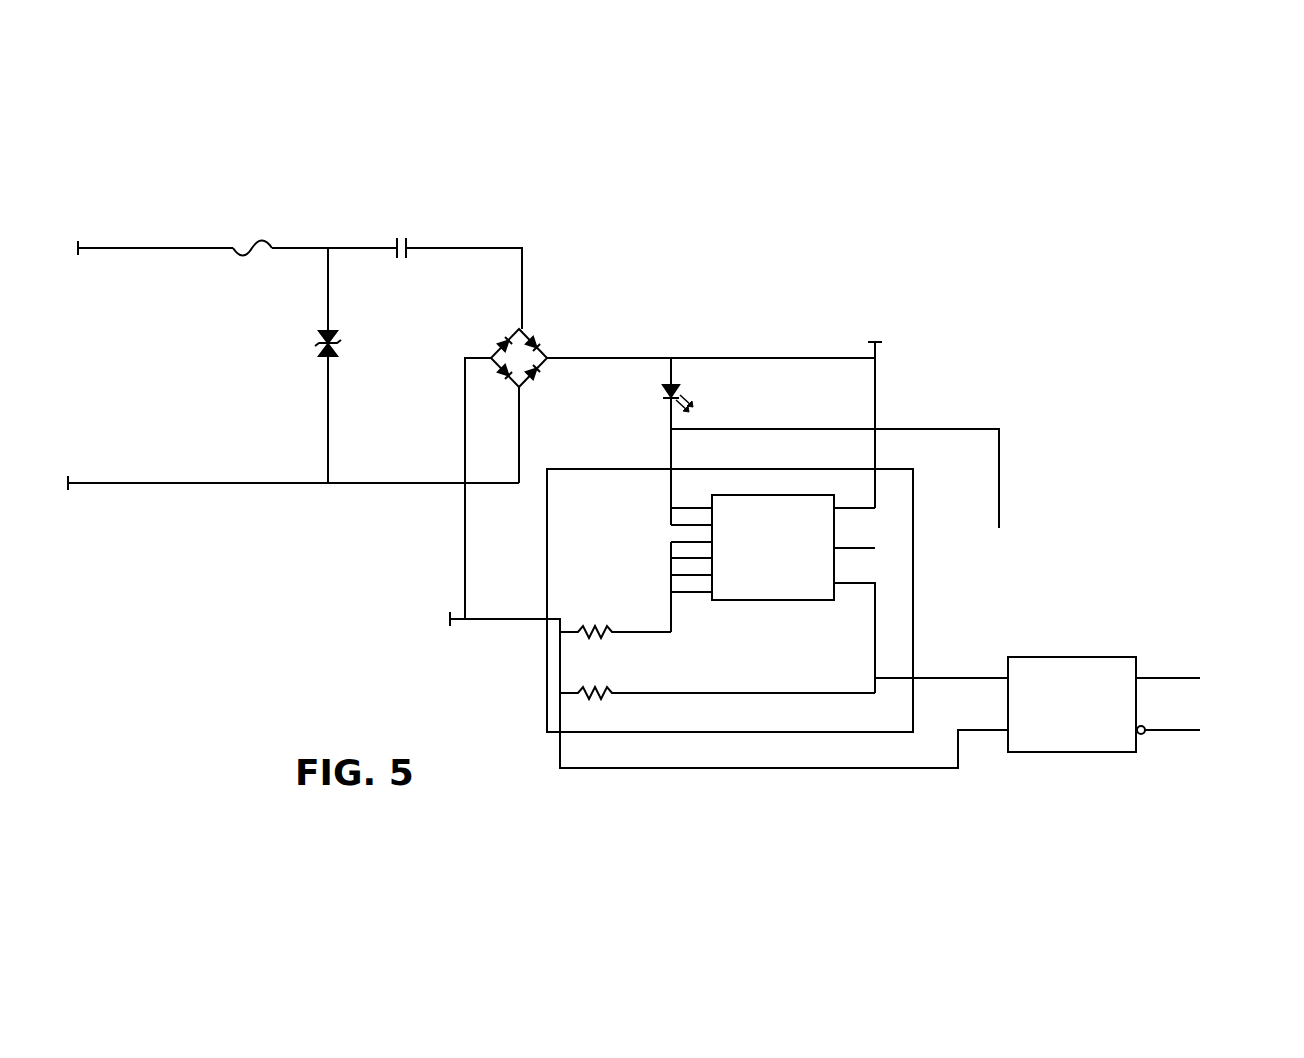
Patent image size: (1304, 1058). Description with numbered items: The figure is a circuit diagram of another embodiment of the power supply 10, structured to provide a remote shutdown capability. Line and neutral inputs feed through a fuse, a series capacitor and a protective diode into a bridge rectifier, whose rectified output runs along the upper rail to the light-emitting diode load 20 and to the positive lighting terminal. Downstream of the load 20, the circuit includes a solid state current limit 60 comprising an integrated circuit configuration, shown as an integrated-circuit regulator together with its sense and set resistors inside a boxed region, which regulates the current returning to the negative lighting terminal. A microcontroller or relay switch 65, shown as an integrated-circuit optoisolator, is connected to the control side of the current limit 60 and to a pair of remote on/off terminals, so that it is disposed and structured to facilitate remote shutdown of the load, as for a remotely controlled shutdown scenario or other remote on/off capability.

The power supply 10 is at (908, 258).
The LED 20 is at (690, 378).
The solid state current limit 60 is at (778, 440).
The microcontroller or relay switch 65 is at (1115, 628).